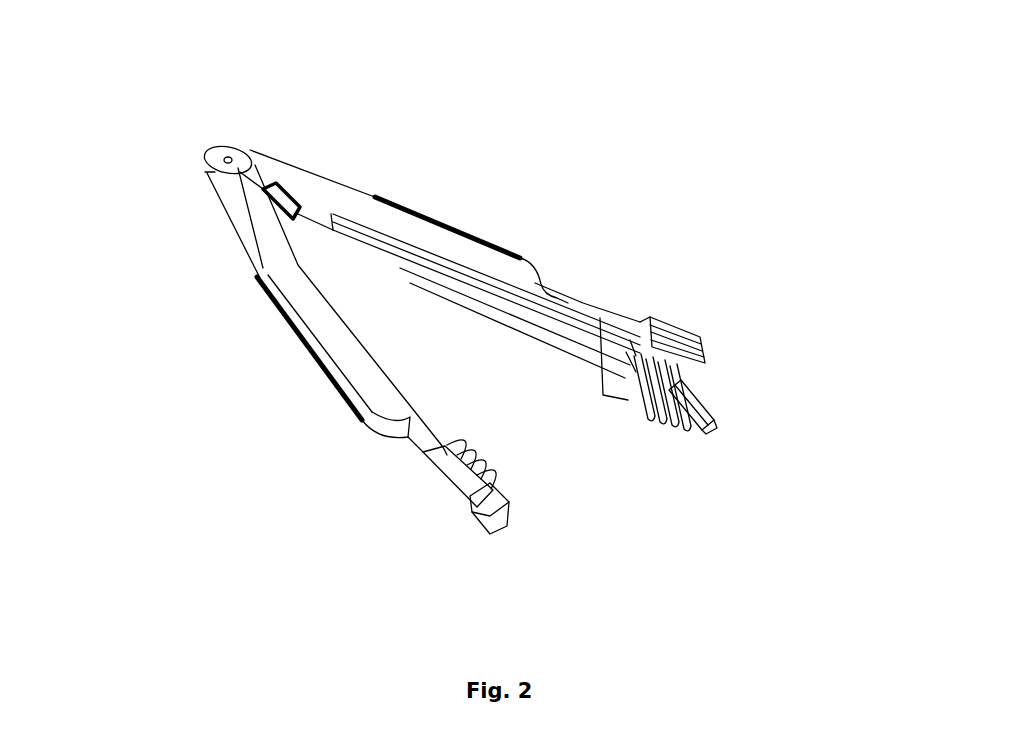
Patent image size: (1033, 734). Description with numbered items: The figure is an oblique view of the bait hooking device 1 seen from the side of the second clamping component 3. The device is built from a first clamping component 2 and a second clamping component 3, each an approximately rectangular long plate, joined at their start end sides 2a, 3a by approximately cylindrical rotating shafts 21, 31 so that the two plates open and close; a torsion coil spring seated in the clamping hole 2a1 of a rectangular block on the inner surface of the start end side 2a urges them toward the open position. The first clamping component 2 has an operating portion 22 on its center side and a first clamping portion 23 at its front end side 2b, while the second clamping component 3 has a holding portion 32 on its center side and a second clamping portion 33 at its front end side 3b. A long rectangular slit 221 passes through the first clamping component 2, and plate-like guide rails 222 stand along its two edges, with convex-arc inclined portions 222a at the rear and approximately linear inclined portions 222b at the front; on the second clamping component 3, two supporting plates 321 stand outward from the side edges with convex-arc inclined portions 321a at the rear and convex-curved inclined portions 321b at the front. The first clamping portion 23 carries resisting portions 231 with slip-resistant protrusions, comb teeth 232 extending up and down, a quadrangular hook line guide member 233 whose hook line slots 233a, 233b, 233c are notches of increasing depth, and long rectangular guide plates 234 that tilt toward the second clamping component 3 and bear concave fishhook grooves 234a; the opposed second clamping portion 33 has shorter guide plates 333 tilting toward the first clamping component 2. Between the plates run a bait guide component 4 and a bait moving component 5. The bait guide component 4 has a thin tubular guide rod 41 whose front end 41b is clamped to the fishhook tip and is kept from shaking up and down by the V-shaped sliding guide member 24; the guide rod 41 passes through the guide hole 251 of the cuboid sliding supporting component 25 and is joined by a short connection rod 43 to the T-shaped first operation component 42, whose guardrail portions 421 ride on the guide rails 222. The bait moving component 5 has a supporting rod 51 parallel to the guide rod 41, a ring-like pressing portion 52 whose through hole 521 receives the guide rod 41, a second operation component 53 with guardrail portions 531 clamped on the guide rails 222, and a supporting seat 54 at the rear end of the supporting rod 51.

The bait hooking device 1 is at (542, 43).
The first clamping component 2 is at (370, 86).
The start end side of the first clamping component 2a is at (306, 120).
The clamping hole 2a1 is at (374, 155).
The front end side of the first clamping component 2b is at (843, 463).
The rotating shaft 21 is at (156, 143).
The operating portion 22 is at (606, 125).
The guide rails 222 is at (481, 166).
The inclined portions 222a is at (469, 91).
The inclined portions 222b is at (679, 246).
The slit 221 is at (494, 391).
The first clamping portion 23 is at (886, 418).
The resisting portions 231 is at (627, 456).
The comb teeth 232 is at (751, 501).
The hook line guide member 233 is at (774, 303).
The hook line slot 233a is at (806, 330).
The hook line slot 233b is at (839, 351).
The hook line slot 233c is at (853, 378).
The guide plates 234 is at (841, 503).
The fishhook grooves 234a is at (796, 406).
The sliding guide member 24 is at (678, 278).
The sliding supporting component 25 is at (443, 138).
The guide hole 251 is at (361, 273).
The second clamping component 3 is at (139, 333).
The start end side of the second clamping component 3a is at (108, 286).
The front end side of the second clamping component 3b is at (366, 610).
The rotating shaft 31 is at (156, 176).
The holding portion 32 is at (153, 408).
The supporting plates 321 is at (224, 431).
The inclined portions 321a is at (141, 373).
The inclined portions 321b is at (314, 476).
The second clamping portion 33 is at (326, 560).
The guide plates 333 is at (569, 581).
The bait guide component 4 is at (590, 190).
The guide rod 41 is at (629, 275).
The front end of the guide rod 41b is at (606, 420).
The first operation component 42 is at (441, 331).
The guardrail portions 421 is at (674, 185).
The connection rod 43 is at (583, 252).
The bait moving component 5 is at (522, 440).
The supporting rod 51 is at (468, 353).
The pressing portion 52 is at (686, 313).
The through hole 521 is at (604, 395).
The second operation component 53 is at (391, 325).
The guardrail portions 531 is at (524, 196).
The supporting seat 54 is at (368, 295).